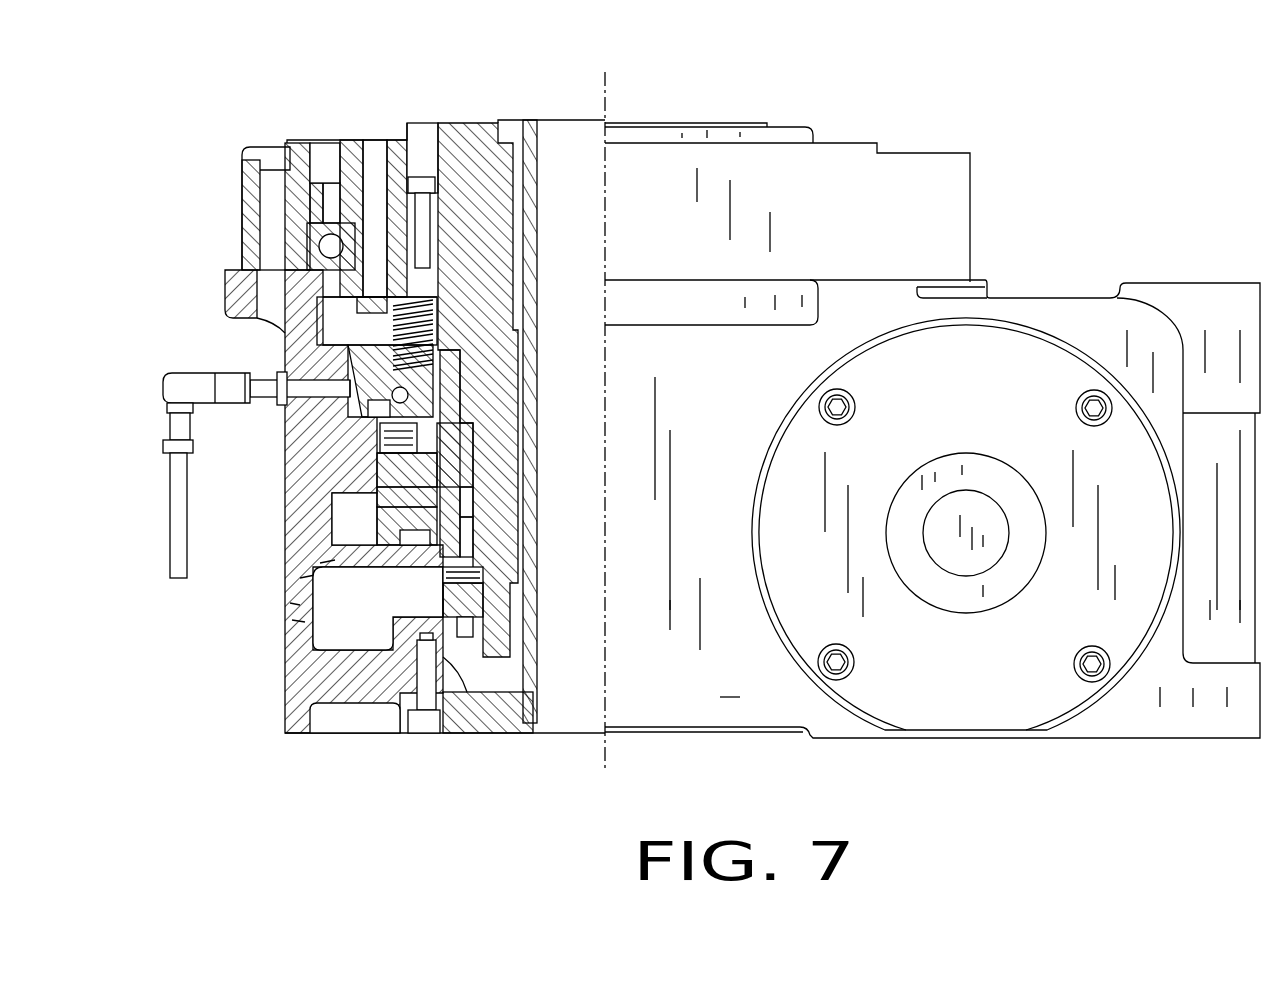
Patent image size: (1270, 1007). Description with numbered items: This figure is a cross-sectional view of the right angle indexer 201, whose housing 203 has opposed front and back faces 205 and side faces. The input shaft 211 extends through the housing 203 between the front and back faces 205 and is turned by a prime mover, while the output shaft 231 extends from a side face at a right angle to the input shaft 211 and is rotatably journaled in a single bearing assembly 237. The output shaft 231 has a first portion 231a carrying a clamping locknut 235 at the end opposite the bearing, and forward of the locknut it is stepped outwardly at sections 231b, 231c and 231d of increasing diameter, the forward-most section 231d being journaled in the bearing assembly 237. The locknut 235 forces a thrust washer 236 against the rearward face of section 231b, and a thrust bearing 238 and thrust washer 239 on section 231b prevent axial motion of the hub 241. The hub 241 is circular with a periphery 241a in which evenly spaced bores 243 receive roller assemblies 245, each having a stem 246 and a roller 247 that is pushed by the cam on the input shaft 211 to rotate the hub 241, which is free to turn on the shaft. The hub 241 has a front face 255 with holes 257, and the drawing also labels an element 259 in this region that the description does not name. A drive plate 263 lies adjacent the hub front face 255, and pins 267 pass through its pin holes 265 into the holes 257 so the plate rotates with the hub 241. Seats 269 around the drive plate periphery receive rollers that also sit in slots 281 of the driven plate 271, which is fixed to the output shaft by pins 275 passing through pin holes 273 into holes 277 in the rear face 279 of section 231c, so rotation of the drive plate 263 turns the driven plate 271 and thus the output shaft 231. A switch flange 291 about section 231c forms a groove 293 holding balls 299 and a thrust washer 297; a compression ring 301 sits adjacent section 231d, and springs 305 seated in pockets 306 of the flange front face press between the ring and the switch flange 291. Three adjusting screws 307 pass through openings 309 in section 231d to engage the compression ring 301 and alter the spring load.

The right angle indexer 201 is at (1045, 232).
The housing 203 is at (940, 152).
The front and back faces 205 is at (737, 697).
The input shaft 211 is at (997, 565).
The output shaft 231 is at (473, 120).
The first portion of output shaft 231a is at (497, 733).
The output shaft section 231b is at (420, 562).
The output shaft section 231c is at (400, 412).
The output shaft section 231d is at (283, 143).
The clamping locknut 235 is at (463, 717).
The thrust washer 236 is at (488, 618).
The bearing assembly 237 is at (285, 170).
The thrust bearing 238 is at (467, 572).
The thrust washer 239 is at (462, 582).
The hub 241 is at (300, 645).
The hub periphery 241a is at (305, 622).
The bores 243 is at (380, 562).
The roller assemblies 245 is at (315, 575).
The stem 246 is at (300, 605).
The roller 247 is at (335, 560).
The hub front face 255 is at (385, 490).
The holes 257 is at (470, 543).
The valve insert 259 is at (385, 510).
The drive plate 263 is at (385, 530).
The pin holes 265 is at (470, 487).
The pins 267 is at (470, 463).
The seats 269 is at (380, 470).
The driven plate 271 is at (380, 458).
The pin holes 273 is at (470, 437).
The pins 275 is at (470, 403).
The holes 277 is at (515, 342).
The rear face 279 is at (467, 410).
The slots 281 is at (385, 428).
The switch flange 291 is at (335, 330).
The groove 293 is at (455, 347).
The thrust washer 297 is at (345, 385).
The balls 299 is at (245, 312).
The compression ring 301 is at (323, 143).
The springs 305 is at (287, 217).
The pockets 306 is at (445, 308).
The adjusting screws 307 is at (400, 138).
The openings 309 is at (433, 123).